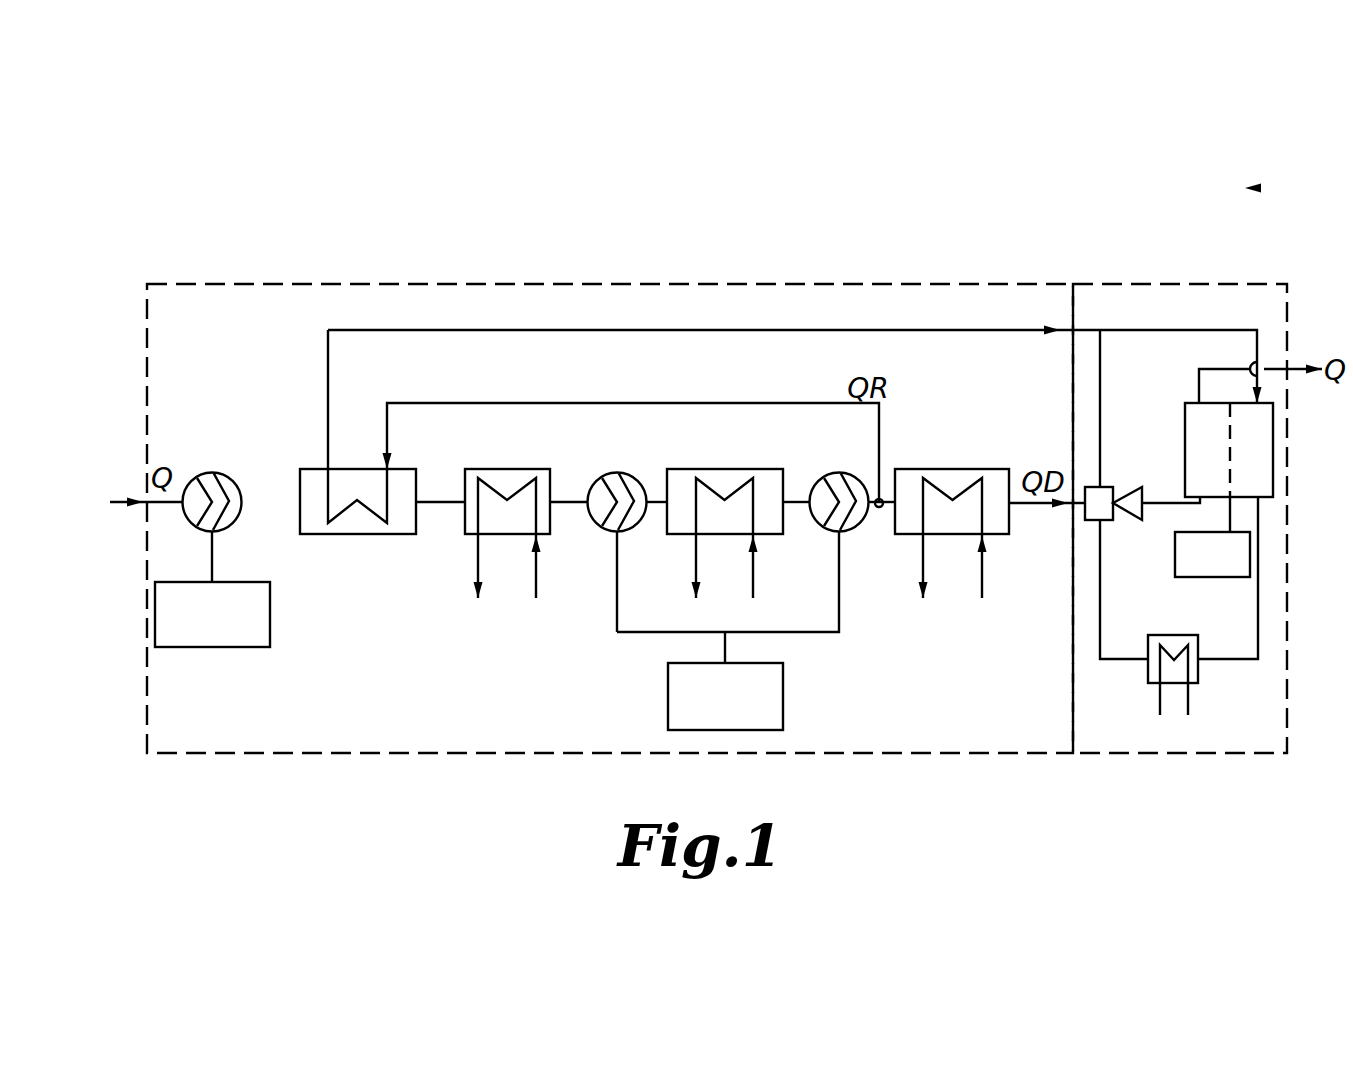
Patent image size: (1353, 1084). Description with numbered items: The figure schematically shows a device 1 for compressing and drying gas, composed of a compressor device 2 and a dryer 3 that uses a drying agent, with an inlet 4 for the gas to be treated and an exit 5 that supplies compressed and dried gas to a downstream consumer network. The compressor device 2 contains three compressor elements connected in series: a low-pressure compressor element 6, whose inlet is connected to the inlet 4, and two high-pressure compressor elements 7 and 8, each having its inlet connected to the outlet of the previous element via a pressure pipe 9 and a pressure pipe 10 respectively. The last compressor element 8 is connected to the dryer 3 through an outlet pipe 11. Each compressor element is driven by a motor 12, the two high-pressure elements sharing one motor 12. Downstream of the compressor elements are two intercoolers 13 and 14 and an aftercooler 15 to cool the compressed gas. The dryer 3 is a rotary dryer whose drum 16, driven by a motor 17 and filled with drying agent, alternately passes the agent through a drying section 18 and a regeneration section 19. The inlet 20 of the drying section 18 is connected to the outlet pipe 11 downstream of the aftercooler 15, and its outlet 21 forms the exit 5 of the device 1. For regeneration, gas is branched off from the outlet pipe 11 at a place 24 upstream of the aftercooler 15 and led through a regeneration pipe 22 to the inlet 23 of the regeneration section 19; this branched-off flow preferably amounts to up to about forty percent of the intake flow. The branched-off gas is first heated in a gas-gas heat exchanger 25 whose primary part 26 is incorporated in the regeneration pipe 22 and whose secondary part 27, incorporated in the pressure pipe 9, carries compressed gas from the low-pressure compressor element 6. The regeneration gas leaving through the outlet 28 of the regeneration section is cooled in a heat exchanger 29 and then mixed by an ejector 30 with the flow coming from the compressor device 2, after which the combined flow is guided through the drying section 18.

The device 1 is at (1247, 187).
The compressor device 2 is at (220, 284).
The dryer 3 is at (1285, 284).
The inlet 4 is at (130, 501).
The exit 5 is at (1293, 353).
The low-pressure compressor element 6 is at (210, 492).
The high-pressure compressor element 7 is at (598, 498).
The high-pressure compressor element 8 is at (840, 484).
The pressure pipe 9 is at (440, 500).
The pressure pipe 10 is at (796, 500).
The outlet pipe 11 is at (1035, 505).
The motor 12 is at (222, 620).
The intercooler 13 is at (510, 469).
The intercooler 14 is at (737, 469).
The aftercooler 15 is at (958, 469).
The drum 16 is at (1273, 470).
The motor 17 is at (1210, 567).
The drying section 18 is at (1207, 433).
The regeneration section 19 is at (1252, 477).
The inlet of the drying section 20 is at (1172, 503).
The outlet of the drying section 21 is at (1199, 369).
The regeneration pipe 22 is at (1016, 330).
The inlet of the regeneration section 23 is at (1262, 378).
The branch-off place 24 is at (879, 507).
The gas-gas heat exchanger 25 is at (320, 469).
The primary part 26 is at (366, 534).
The secondary part 27 is at (316, 522).
The outlet of the regeneration section 28 is at (1258, 572).
The heat exchanger 29 is at (1200, 668).
The ejector 30 is at (1100, 330).